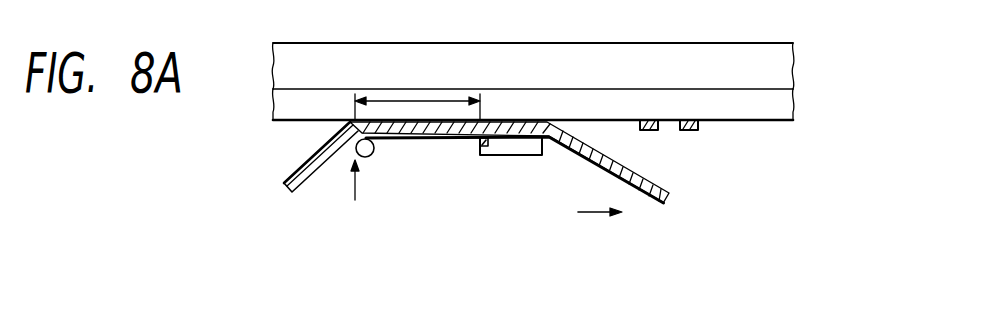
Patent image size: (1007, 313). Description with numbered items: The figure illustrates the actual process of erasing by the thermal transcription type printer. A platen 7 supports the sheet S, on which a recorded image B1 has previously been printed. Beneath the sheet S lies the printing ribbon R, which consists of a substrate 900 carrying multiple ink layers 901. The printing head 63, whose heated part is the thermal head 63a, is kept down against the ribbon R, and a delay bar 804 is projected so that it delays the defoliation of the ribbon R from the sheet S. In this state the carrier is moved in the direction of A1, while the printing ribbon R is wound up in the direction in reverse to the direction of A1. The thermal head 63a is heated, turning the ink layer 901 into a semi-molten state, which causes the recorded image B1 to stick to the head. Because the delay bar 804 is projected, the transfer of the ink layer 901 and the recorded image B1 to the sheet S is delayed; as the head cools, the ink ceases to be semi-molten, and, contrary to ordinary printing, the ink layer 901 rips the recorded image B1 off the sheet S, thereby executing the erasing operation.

The platen 7 is at (778, 67).
The sheet S is at (777, 105).
The recorded image B1 is at (688, 119).
The ink layers 901 is at (653, 182).
The substrate of ribbon 900 is at (662, 206).
The printing head 63 is at (528, 146).
The thermal head 63a is at (478, 146).
The delay bar 804 is at (371, 155).
The ribbon R is at (290, 192).
The direction of carrier movement A1 is at (600, 200).